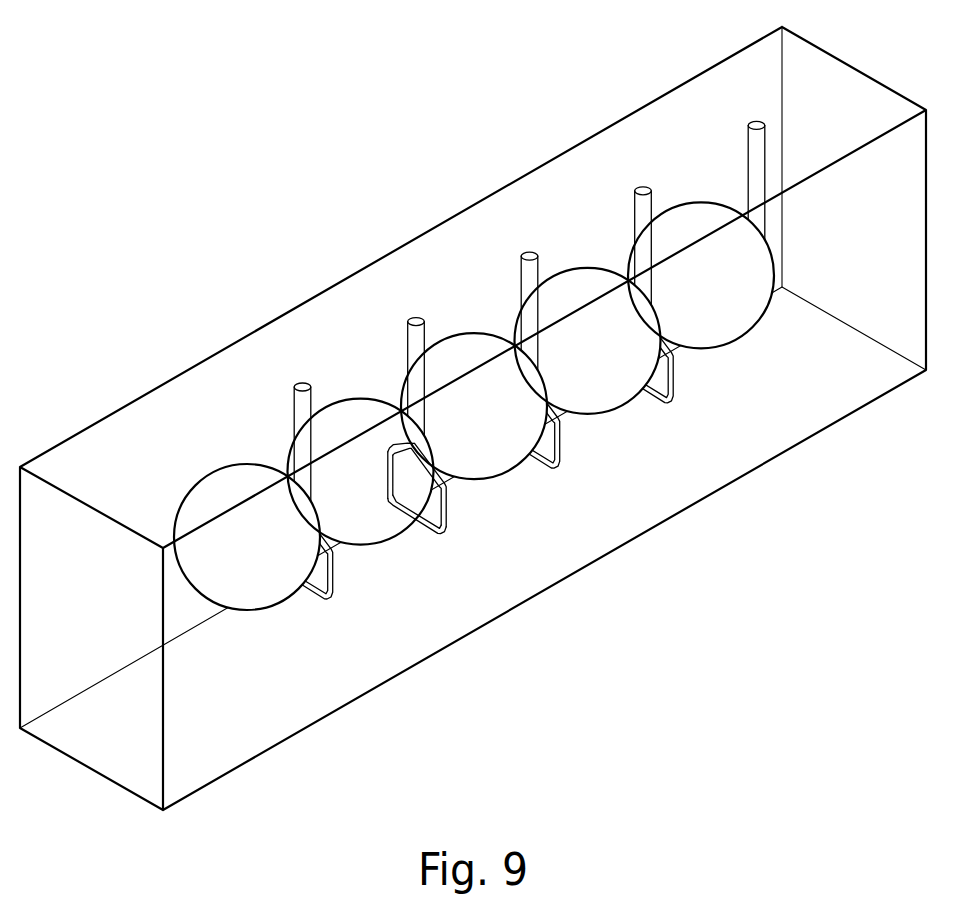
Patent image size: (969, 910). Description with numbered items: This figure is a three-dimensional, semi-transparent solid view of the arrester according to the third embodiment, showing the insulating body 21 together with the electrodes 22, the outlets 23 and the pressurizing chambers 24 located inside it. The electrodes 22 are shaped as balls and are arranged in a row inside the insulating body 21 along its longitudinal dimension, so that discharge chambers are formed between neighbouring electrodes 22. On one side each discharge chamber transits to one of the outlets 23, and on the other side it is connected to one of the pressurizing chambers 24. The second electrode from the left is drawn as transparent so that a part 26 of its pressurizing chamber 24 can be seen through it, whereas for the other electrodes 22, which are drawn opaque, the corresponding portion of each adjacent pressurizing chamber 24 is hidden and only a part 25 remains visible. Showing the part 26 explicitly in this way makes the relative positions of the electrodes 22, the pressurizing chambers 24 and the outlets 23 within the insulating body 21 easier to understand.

The insulating body 21 is at (343, 787).
The electrodes 22 is at (455, 757).
The outlets 23 is at (330, 205).
The pressurizing chambers 24 is at (608, 687).
The part of pressurizing chamber 25 is at (520, 718).
The part of pressurizing chamber 26 is at (238, 237).